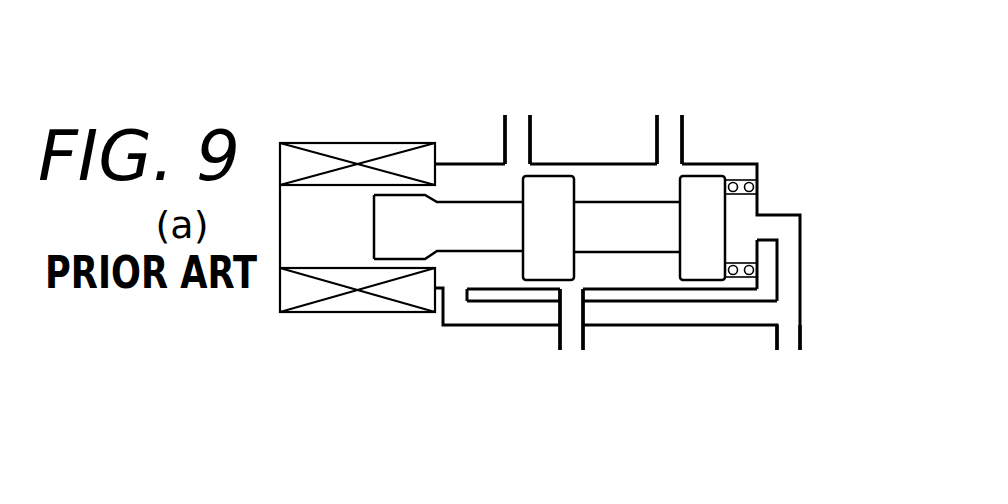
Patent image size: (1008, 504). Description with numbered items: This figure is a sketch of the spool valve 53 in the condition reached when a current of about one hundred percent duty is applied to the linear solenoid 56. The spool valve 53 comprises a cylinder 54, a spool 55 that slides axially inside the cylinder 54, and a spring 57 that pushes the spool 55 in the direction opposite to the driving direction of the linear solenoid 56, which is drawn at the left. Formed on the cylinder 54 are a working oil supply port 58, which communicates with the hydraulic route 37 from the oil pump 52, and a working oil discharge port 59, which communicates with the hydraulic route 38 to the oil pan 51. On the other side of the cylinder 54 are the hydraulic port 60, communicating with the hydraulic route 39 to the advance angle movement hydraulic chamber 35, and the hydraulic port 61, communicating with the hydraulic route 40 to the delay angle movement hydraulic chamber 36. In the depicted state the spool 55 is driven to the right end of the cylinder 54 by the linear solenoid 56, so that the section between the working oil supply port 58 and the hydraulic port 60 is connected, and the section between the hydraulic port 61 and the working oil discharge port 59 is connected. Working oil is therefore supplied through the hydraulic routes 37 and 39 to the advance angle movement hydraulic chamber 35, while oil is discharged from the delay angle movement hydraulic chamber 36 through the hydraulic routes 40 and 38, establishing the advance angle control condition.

The spool valve 53 is at (812, 277).
The cylinder 54 is at (739, 164).
The spool 55 is at (615, 210).
The linear solenoid 56 is at (333, 143).
The spring 57 is at (759, 183).
The working oil supply port 58 is at (575, 315).
The working oil discharge port 59 is at (791, 230).
The hydraulic port 60 is at (677, 132).
The hydraulic port 61 is at (511, 137).
The hydraulic route 40 is at (517, 110).
The delay angle movement hydraulic chamber 36 is at (517, 85).
The hydraulic route 39 is at (668, 110).
The advance angle movement hydraulic chamber 35 is at (668, 84).
The hydraulic route 37 is at (573, 348).
The oil pump 52 is at (573, 374).
The hydraulic route 38 is at (787, 342).
The oil pan 51 is at (787, 392).